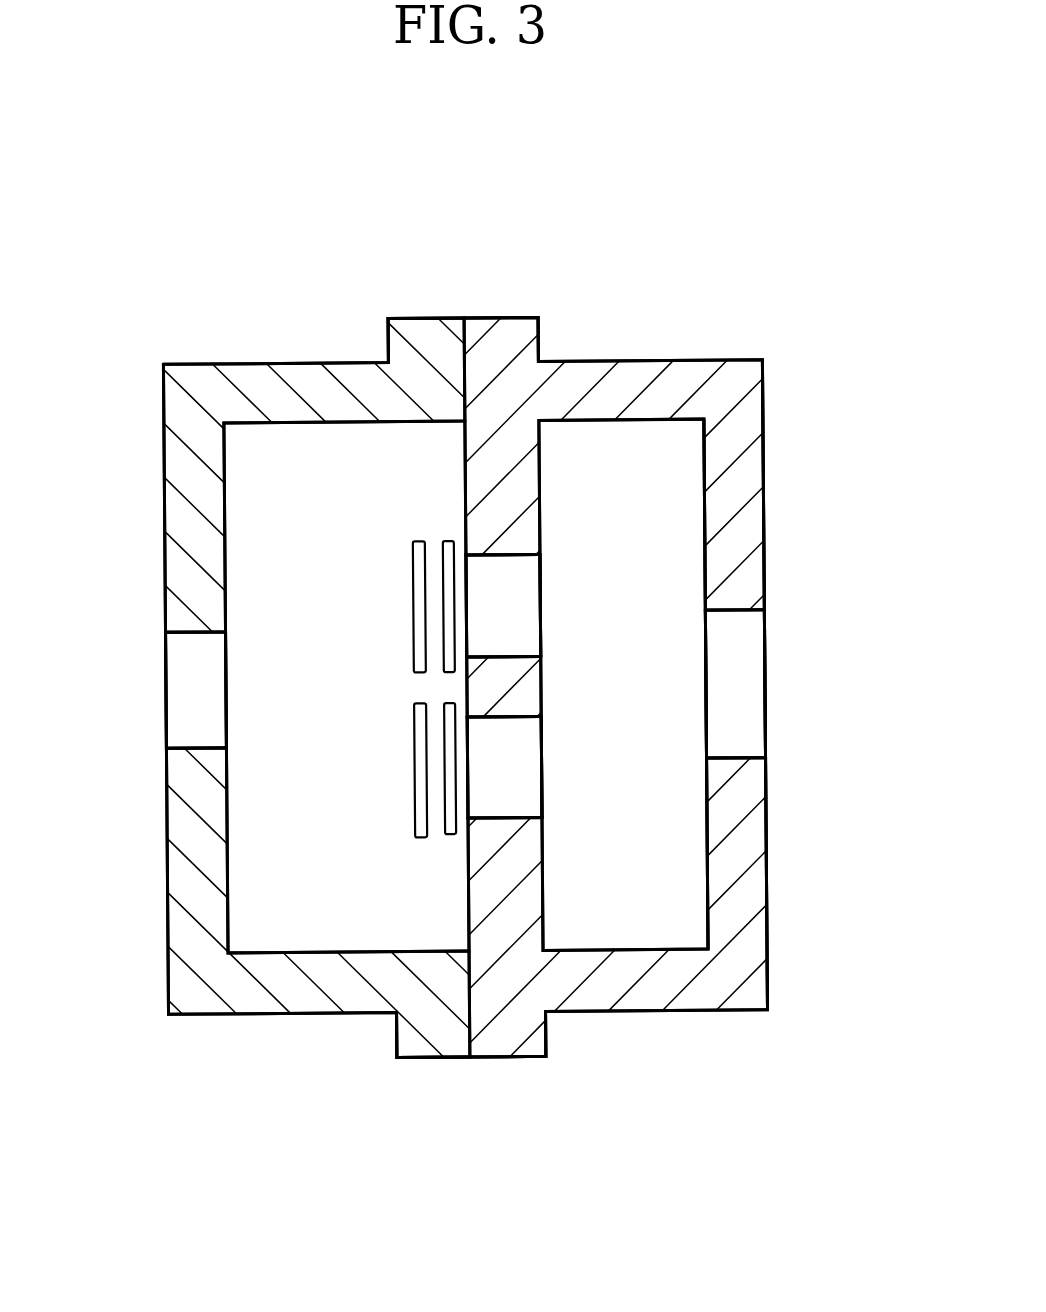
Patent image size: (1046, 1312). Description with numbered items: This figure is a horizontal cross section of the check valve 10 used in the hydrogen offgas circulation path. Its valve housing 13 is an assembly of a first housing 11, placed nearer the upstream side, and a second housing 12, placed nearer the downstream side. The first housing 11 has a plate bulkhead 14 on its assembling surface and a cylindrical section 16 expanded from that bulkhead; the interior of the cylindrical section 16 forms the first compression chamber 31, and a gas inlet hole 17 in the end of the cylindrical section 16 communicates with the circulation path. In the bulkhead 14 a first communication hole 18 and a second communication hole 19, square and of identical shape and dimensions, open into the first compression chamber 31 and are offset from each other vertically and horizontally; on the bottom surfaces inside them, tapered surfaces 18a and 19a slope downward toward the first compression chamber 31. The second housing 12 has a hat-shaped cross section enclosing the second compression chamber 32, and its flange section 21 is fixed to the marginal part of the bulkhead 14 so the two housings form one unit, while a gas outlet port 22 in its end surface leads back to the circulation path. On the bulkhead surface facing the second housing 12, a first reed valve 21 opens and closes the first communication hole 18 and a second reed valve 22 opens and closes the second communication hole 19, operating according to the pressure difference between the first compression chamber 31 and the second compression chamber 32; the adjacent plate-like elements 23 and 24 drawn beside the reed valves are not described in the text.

The check valve 10 is at (616, 256).
The first housing 11 is at (765, 445).
The second housing 12 is at (165, 430).
The valve housing 13 is at (466, 313).
The plate bulkhead 14 is at (503, 1058).
The cylindrical section 16 is at (765, 533).
The gas inlet hole 17 is at (737, 611).
The first communication hole 18 is at (505, 556).
The tapered surface 18a is at (507, 613).
The second communication hole 19 is at (505, 718).
The tapered surface 19a is at (513, 783).
The first reed valve 21 is at (448, 541).
The second reed valve 22 is at (205, 747).
The upper element plate 23 is at (413, 605).
The lower element plate 24 is at (415, 768).
The first compression chamber 31 is at (640, 457).
The second compression chamber 32 is at (285, 940).